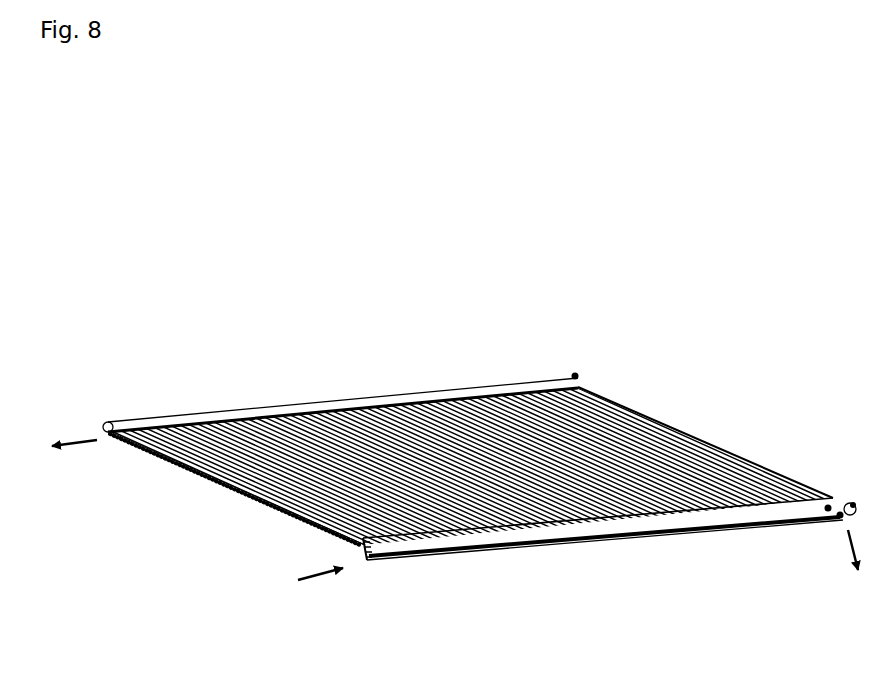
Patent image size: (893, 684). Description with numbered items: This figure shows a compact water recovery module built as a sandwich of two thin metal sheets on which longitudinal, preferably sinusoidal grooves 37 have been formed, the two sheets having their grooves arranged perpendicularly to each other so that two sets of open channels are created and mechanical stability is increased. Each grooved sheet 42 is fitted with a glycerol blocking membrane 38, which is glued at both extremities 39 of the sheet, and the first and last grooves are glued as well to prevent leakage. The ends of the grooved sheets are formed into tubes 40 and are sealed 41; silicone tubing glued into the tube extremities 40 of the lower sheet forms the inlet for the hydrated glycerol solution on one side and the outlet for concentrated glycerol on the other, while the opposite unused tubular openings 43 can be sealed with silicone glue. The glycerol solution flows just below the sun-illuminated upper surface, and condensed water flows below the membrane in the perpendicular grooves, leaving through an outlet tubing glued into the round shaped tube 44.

The grooves 37 is at (305, 502).
The glycerol blocking membrane 38 is at (366, 557).
The extremities of the grooved sheet 39 is at (372, 557).
The tubes 40 is at (110, 424).
The seal 41 is at (292, 415).
The grooved sheet 42 is at (213, 480).
The unused tubular openings 43 is at (575, 376).
The round shaped tube 44 is at (840, 515).